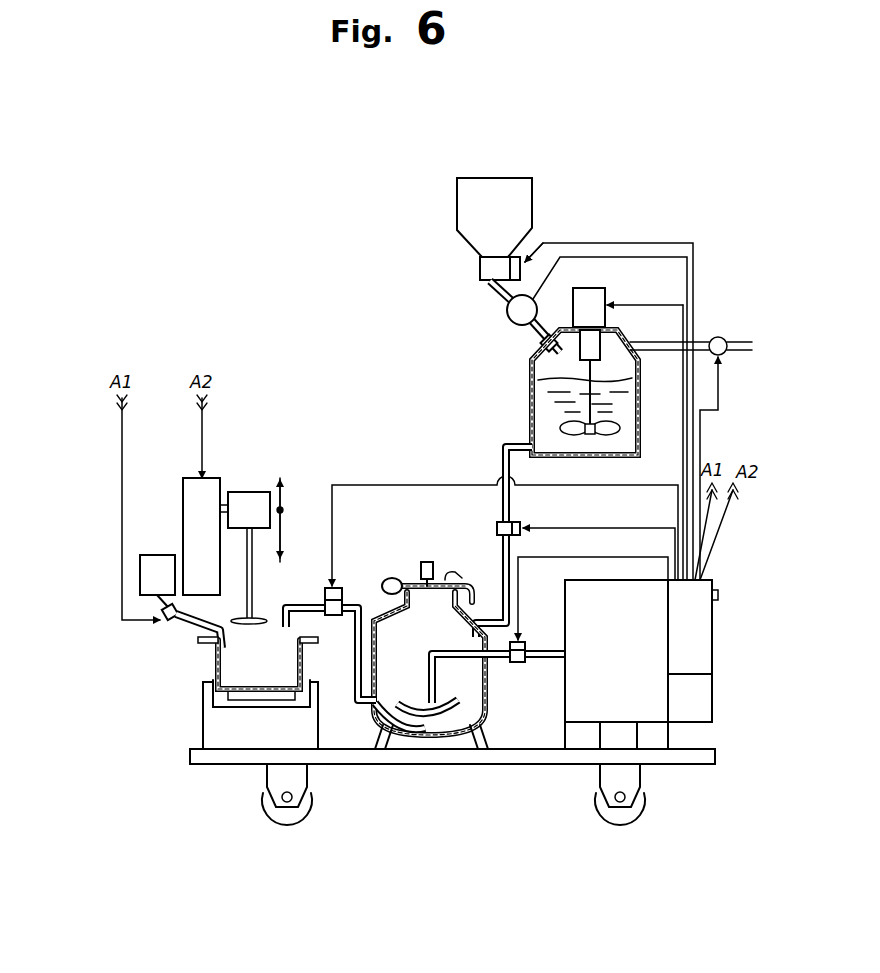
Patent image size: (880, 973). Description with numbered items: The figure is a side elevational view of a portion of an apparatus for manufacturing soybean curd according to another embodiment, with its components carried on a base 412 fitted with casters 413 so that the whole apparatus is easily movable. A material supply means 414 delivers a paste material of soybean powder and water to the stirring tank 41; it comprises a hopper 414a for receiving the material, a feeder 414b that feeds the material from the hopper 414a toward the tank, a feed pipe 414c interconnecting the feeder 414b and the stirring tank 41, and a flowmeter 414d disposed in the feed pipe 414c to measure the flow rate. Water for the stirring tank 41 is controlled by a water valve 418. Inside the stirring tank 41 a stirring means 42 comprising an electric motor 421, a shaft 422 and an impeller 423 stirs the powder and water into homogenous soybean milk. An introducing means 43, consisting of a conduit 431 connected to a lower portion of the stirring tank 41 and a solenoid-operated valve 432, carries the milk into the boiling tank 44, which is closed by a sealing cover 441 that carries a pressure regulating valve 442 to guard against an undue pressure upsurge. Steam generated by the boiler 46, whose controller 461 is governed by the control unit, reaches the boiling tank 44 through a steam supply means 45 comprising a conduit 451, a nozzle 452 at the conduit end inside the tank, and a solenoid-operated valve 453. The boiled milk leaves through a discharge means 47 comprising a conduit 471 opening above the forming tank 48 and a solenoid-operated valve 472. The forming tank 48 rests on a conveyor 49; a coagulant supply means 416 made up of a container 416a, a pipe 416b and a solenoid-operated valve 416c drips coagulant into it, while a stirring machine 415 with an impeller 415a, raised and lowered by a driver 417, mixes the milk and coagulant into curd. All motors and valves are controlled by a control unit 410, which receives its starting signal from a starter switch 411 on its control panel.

The stirring tank 41 is at (608, 402).
The control unit 410 is at (717, 651).
The starter switch 411 is at (720, 596).
The base 412 is at (455, 765).
The casters 413 is at (300, 812).
The material supply means 414 is at (502, 254).
The hopper 414a is at (524, 218).
The feeder 414b is at (487, 278).
The feed pipe 414c is at (510, 300).
The flowmeter 414d is at (512, 324).
The stirring machine 415 is at (258, 528).
The impeller 415a is at (255, 618).
The coagulant supply means 416 is at (126, 609).
The container 416a is at (150, 555).
The pipe 416b is at (190, 627).
The solenoid-operated valve 416c is at (172, 624).
The driver 417 is at (185, 495).
The water valve 418 is at (724, 337).
The stirring means 42 is at (607, 311).
The electric motor 421 is at (607, 312).
The shaft 422 is at (635, 378).
The impeller 423 is at (622, 430).
The introducing means 43 is at (480, 525).
The conduit 431 is at (497, 500).
The solenoid-operated valve 432 is at (497, 533).
The boiling tank 44 is at (437, 629).
The sealing cover 441 is at (403, 580).
The sensor 442 is at (427, 560).
The steam supply means 45 is at (498, 679).
The conduit 451 is at (478, 722).
The nozzle 452 is at (405, 700).
The solenoid-operated valve 453 is at (518, 666).
The boiler 46 is at (620, 665).
The controller 461 is at (713, 700).
The discharge means 47 is at (331, 622).
The conduit 471 is at (355, 664).
The solenoid-operated valve 472 is at (343, 588).
The forming tank 48 is at (213, 667).
The conveyor 49 is at (203, 720).